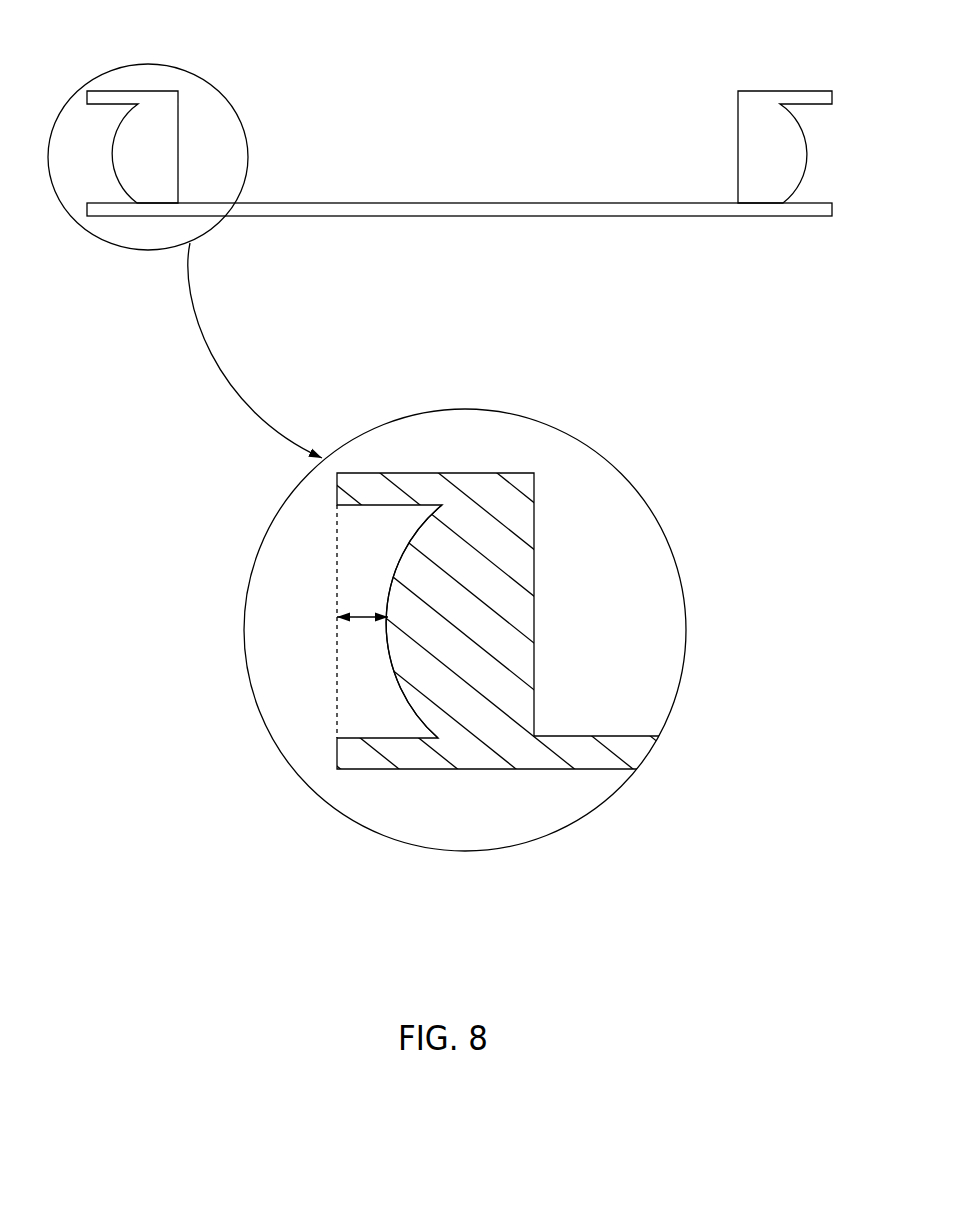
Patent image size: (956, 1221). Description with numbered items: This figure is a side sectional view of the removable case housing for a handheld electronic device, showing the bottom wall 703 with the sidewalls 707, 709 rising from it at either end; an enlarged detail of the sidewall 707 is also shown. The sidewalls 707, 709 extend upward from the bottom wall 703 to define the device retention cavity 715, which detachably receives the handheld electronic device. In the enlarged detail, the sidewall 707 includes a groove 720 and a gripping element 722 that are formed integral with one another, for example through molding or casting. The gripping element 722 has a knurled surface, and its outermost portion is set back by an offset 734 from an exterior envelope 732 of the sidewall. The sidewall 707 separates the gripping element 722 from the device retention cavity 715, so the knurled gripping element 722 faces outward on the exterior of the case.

The device retention cavity 715 is at (297, 73).
The bottom wall 703 is at (453, 207).
The sidewall 707 is at (178, 155).
The sidewall 709 is at (738, 155).
The gripping element 722 is at (510, 609).
The exterior envelope 732 is at (337, 535).
The offset 734 is at (362, 618).
The groove 720 is at (408, 728).